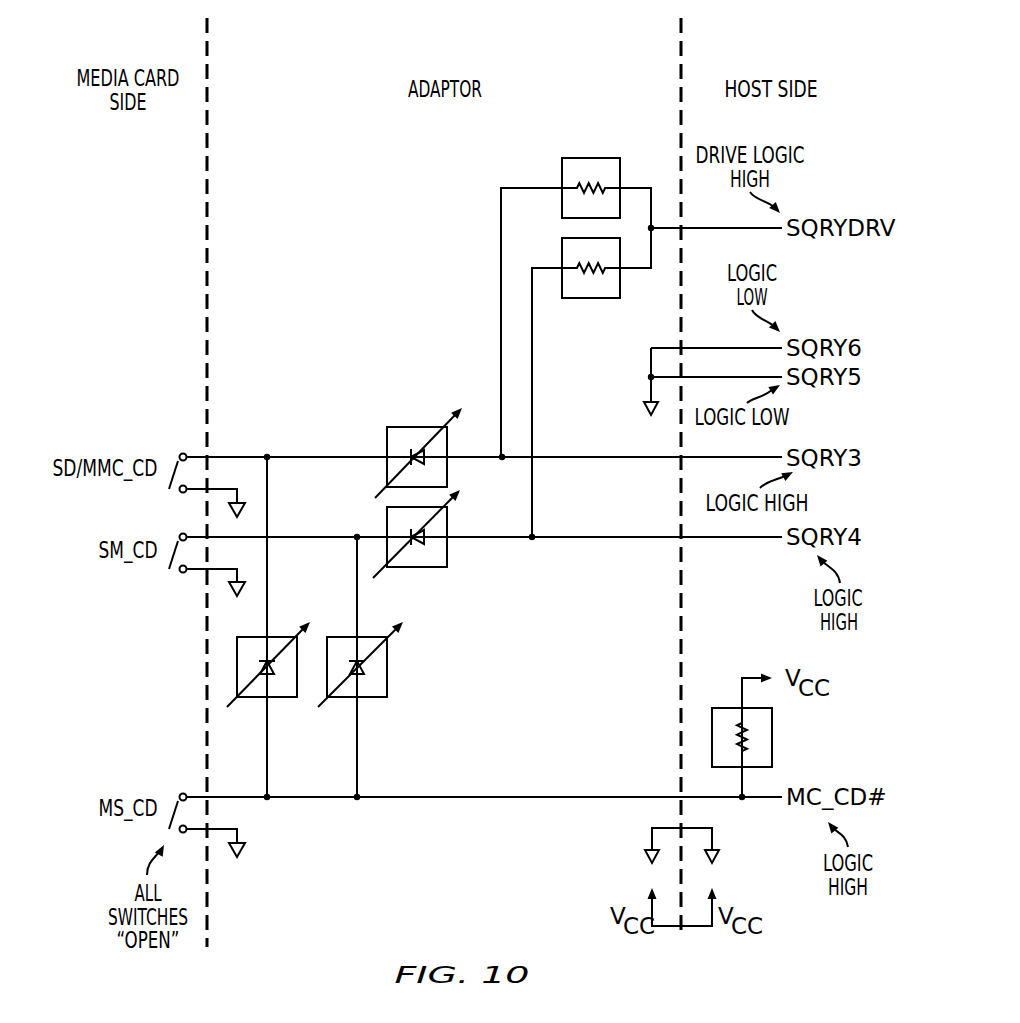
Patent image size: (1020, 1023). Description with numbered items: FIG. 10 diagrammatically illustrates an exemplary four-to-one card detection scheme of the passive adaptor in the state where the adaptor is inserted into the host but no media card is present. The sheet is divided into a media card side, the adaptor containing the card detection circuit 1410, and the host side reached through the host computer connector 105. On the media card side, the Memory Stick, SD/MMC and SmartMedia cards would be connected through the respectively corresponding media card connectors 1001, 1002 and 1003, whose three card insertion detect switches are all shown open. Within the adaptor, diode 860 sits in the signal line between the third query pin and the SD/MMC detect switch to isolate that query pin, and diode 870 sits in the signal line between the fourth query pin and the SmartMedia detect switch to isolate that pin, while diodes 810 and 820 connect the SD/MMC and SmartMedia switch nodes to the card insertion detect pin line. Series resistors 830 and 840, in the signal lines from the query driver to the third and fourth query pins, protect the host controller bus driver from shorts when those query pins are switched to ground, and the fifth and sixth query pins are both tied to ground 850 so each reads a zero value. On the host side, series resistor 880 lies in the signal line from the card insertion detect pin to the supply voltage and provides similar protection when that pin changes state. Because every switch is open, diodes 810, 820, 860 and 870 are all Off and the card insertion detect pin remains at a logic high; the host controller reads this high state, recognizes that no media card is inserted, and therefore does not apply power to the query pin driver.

The card detection circuit 1410 is at (336, 62).
The host computer connector 105 is at (681, 657).
The media card connector 1001 is at (170, 774).
The media card connector 1002 is at (172, 437).
The media card connector 1003 is at (172, 587).
The diode 810 is at (257, 697).
The diode 820 is at (370, 697).
The series resistor 830 is at (592, 158).
The series resistor 840 is at (592, 298).
The ground 850 is at (647, 409).
The diode 860 is at (417, 427).
The diode 870 is at (447, 550).
The series resistor 880 is at (772, 735).